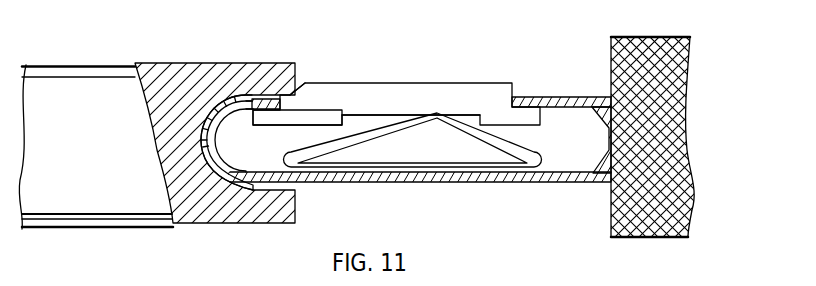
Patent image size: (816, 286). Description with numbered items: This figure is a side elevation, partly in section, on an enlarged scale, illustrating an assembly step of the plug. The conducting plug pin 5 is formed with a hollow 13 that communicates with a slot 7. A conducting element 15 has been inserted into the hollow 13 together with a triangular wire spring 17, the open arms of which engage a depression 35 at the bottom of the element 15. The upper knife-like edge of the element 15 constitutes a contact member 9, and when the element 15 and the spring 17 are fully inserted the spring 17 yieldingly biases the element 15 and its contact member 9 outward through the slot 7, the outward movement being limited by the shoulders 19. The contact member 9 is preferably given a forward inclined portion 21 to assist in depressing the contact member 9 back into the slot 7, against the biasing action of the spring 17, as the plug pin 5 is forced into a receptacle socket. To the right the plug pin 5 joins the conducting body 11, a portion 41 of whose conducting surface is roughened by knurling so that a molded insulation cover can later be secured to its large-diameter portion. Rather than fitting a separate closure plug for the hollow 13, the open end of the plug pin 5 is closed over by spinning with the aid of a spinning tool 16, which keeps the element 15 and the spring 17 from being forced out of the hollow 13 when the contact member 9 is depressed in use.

The plug pin 5 is at (547, 182).
The slot 7 is at (515, 96).
The contact member 9 is at (421, 82).
The conducting body 11 is at (650, 238).
The hollow 13 is at (572, 133).
The conducting element 15 is at (302, 113).
The spinning tool 16 is at (215, 107).
The triangular wire spring 17 is at (507, 144).
The shoulders 19 is at (262, 112).
The forward inclined portion 21 is at (303, 85).
The depression 35 is at (371, 116).
The roughened portion 41 is at (650, 42).